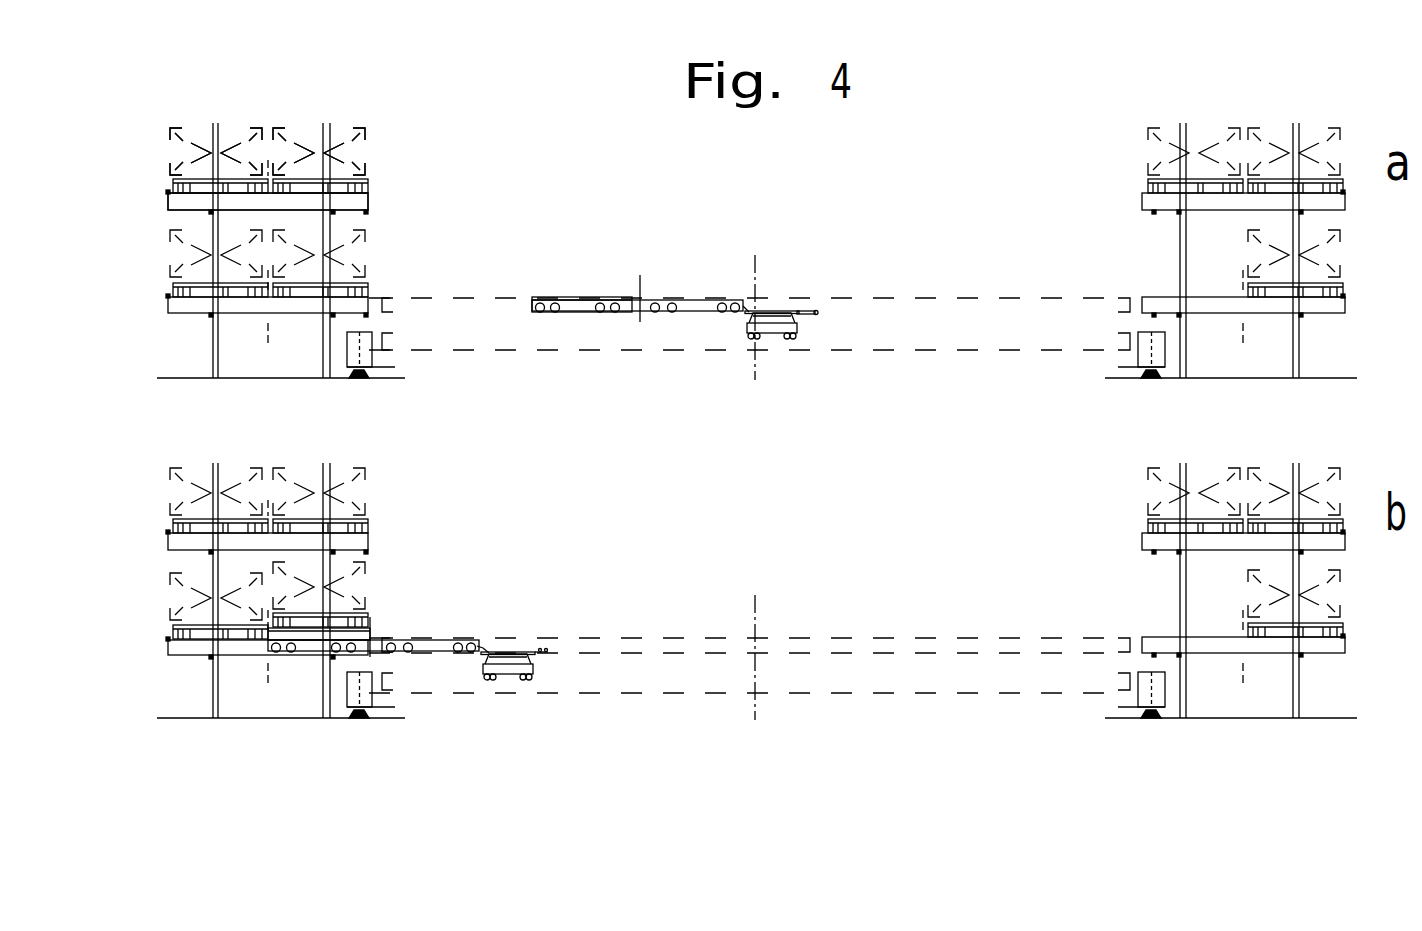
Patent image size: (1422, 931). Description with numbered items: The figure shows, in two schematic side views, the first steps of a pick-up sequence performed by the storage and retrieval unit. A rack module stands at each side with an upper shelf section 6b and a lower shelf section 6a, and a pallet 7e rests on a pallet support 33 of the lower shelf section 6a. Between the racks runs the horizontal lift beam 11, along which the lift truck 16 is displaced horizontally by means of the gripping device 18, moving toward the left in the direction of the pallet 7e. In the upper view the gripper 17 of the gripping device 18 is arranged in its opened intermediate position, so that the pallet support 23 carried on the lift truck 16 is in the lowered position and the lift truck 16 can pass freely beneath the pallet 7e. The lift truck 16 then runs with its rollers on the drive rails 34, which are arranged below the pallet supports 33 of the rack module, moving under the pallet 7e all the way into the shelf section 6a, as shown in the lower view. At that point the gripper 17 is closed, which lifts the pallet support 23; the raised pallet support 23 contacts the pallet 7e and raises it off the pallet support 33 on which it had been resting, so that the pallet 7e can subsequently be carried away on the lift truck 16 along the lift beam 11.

In FIG. 4a, the shelf section 6a is at (373, 258).
In FIG. 4a, the shelf section 6b is at (377, 165).
In FIG. 4a, the pallet 7e is at (315, 281).
In FIG. 4b, the pallet 7e is at (313, 613).
In FIG. 4a, the lift beam 11 is at (939, 300).
In FIG. 4b, the lift beam 11 is at (939, 646).
In FIG. 4a, the lift truck 16 is at (605, 287).
In FIG. 4b, the lift truck 16 is at (457, 632).
In FIG. 4a, the gripper 17 is at (807, 312).
In FIG. 4a, the gripping device 18 is at (768, 318).
In FIG. 4b, the gripping device 18 is at (513, 658).
In FIG. 4b, the pallet support 23 is at (367, 630).
In FIG. 4b, the pallet support 33 is at (187, 640).
In FIG. 4b, the drive rail 34 is at (185, 654).